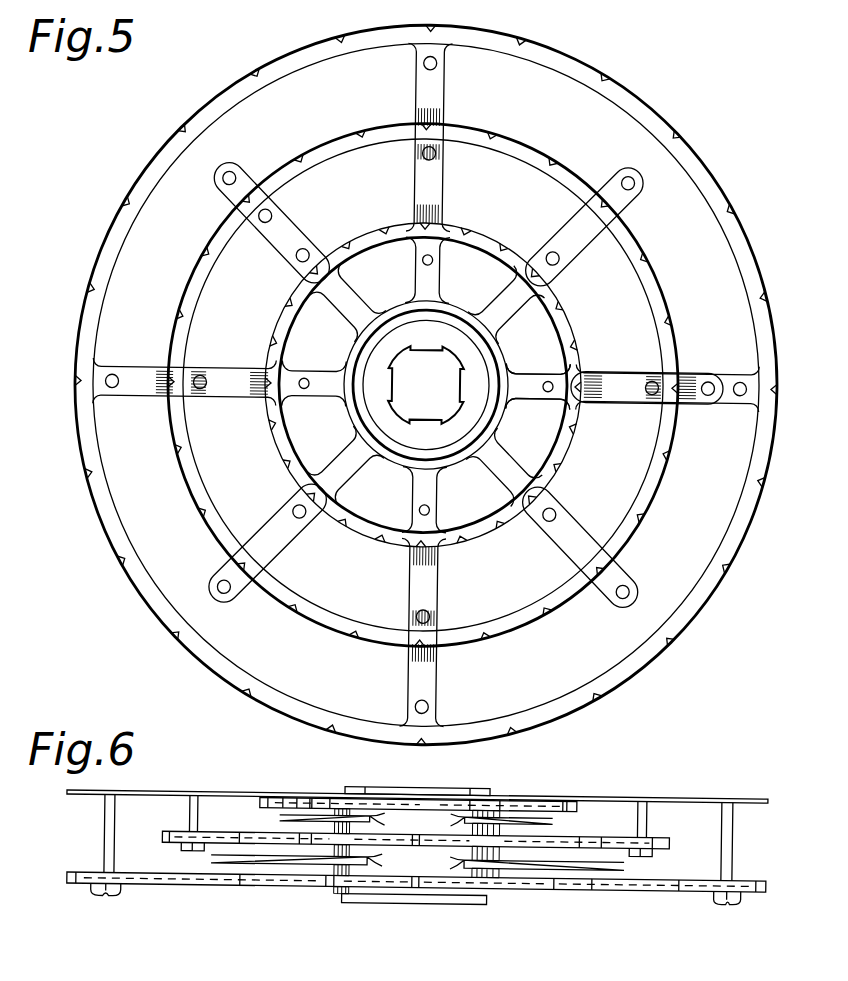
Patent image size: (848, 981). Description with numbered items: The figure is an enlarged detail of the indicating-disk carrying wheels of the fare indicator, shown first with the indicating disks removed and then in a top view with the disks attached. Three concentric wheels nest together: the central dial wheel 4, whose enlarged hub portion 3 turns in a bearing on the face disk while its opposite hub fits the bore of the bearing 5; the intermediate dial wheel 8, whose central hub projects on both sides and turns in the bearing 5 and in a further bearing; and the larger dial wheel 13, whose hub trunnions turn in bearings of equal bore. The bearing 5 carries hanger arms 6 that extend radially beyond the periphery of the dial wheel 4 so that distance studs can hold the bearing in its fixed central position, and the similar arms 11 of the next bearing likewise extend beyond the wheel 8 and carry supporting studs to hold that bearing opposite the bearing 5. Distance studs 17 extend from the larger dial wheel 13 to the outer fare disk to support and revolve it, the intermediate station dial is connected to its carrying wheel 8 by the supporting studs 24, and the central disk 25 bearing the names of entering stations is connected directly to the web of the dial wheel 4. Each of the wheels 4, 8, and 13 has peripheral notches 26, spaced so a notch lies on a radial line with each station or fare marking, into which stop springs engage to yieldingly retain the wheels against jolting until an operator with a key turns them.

In FIG. 6, the enlarged hub portion 3 is at (343, 784).
In FIG. 6, the dial wheel 4 is at (297, 797).
In FIG. 5, the bearing 5 is at (423, 396).
In FIG. 6, the bearing 5 is at (477, 785).
In FIG. 5, the hanger arms 6 is at (443, 385).
In FIG. 6, the hanger arms 6 is at (527, 812).
In FIG. 5, the dial wheel 8 is at (422, 393).
In FIG. 6, the dial wheel 8 is at (573, 830).
In FIG. 5, the arms 11 is at (200, 185).
In FIG. 6, the arms 11 is at (574, 856).
In FIG. 5, the larger dial wheel 13 is at (260, 226).
In FIG. 6, the larger dial wheel 13 is at (644, 880).
In FIG. 6, the distance studs 17 is at (724, 854).
In FIG. 6, the supporting studs 24 is at (643, 804).
In FIG. 6, the central disk 25 is at (509, 886).
In FIG. 5, the notches 26 is at (435, 385).
In FIG. 6, the notches 26 is at (312, 797).